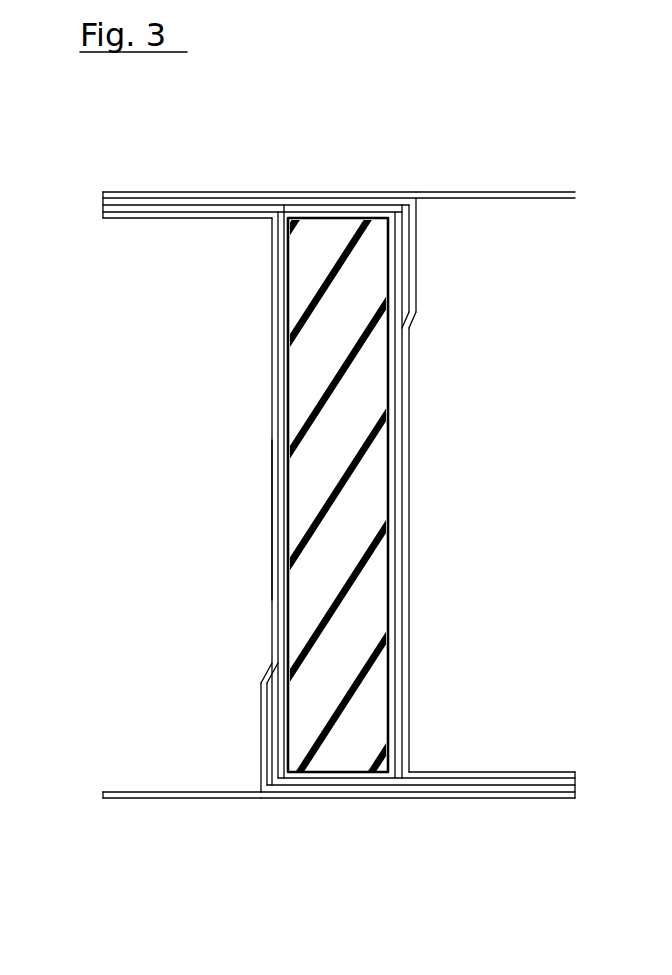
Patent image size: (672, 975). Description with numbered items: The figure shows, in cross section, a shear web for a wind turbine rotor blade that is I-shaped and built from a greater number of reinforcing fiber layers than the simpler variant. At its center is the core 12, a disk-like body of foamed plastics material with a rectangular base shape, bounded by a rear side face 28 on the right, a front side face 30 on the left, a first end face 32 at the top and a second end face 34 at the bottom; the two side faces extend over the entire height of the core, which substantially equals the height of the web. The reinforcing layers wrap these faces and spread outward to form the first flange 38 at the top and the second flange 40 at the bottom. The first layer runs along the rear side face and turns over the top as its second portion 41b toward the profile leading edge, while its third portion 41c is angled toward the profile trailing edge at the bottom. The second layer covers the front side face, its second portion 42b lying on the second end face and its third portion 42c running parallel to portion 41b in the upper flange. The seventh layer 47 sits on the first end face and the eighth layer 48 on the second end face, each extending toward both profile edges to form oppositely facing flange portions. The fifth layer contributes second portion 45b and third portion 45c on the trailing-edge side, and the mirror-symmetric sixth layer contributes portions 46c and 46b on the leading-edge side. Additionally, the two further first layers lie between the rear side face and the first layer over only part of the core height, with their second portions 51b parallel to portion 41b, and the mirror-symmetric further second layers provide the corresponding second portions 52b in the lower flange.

The core 12 is at (352, 598).
The rear side face 28 is at (399, 470).
The front side face 30 is at (280, 515).
The first end face 32 is at (334, 192).
The second end face 34 is at (323, 800).
The first flange 38 is at (76, 229).
The second flange 40 is at (585, 742).
The second portion of the first layer 41b is at (237, 196).
The third portion of the first layer 41c is at (425, 767).
The third portion of the second layer 42c is at (148, 220).
The second portion of the second layer 42b is at (373, 798).
The second portion of the fifth layer 45b is at (545, 203).
The third portion of the fifth layer 45c is at (492, 767).
The third portion of the sixth layer 46c is at (232, 222).
The second portion of the sixth layer 46b is at (190, 792).
The seventh layer 47 is at (529, 193).
The eighth layer 48 is at (153, 800).
The second portion of the further first layer 51b is at (138, 192).
The second portion of the further second layer 52b is at (470, 798).